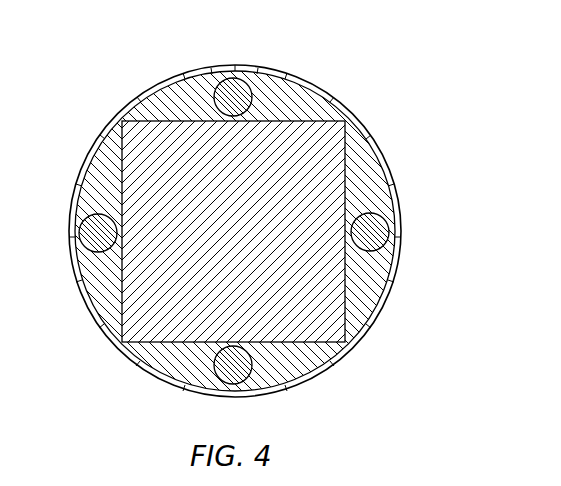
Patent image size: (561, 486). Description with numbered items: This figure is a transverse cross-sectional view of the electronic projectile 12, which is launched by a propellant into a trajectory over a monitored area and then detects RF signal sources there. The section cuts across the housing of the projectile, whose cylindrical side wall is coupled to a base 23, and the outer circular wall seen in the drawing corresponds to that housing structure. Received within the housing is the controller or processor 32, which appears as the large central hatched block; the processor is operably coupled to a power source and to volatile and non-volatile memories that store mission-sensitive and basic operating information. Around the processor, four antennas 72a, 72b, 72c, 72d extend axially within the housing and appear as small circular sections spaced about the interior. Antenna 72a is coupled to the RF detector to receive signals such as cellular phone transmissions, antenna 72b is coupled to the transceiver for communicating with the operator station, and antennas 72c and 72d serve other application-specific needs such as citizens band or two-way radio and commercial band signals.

The electronic projectile 12 is at (340, 72).
The base 23 is at (368, 133).
The controller or processor 32 is at (162, 121).
The antenna 72a is at (93, 242).
The antenna 72b is at (242, 98).
The antenna 72c is at (380, 241).
The antenna 72d is at (217, 372).